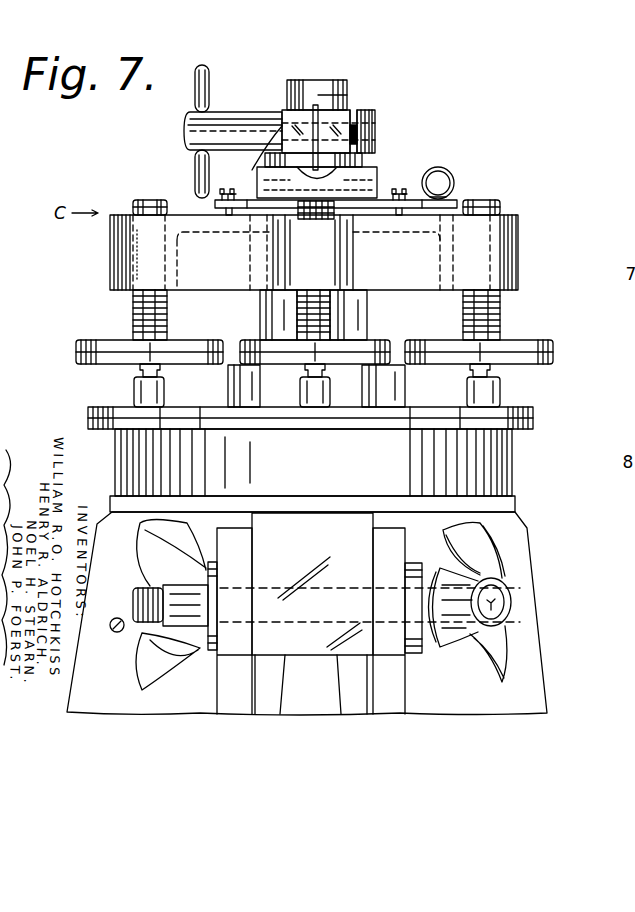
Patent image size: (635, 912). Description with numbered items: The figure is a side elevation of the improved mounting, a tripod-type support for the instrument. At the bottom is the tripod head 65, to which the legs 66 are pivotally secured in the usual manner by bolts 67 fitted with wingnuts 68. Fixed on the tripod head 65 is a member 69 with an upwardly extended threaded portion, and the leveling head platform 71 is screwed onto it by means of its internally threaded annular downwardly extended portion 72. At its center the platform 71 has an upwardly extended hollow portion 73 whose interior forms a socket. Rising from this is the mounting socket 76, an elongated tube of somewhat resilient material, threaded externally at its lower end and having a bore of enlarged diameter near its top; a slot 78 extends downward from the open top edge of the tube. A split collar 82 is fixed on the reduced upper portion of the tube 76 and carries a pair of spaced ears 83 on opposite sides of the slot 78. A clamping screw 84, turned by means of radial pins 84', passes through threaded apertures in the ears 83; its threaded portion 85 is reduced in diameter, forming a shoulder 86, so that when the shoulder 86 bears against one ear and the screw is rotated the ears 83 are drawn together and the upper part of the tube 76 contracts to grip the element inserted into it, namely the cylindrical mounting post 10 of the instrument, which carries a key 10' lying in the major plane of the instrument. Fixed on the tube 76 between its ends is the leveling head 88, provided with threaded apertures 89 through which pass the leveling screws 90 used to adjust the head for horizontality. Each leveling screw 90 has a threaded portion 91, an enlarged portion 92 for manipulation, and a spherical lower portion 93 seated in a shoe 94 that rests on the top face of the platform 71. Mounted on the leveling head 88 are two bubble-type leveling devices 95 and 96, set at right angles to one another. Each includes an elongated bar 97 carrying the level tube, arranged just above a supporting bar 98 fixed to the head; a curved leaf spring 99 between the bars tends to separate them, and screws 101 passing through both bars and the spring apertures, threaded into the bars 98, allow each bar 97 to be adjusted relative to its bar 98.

The mounting post 10 is at (354, 78).
The key 10' is at (356, 93).
The tripod head 65 is at (513, 528).
The legs 66 is at (532, 666).
The bolts 67 is at (140, 605).
The wingnuts 68 is at (478, 555).
The member 69 is at (515, 505).
The leveling head platform 71 is at (536, 414).
The annular downwardly extended portion 72 is at (500, 462).
The upwardly extended hollow portion 73 is at (406, 383).
The mounting socket 76 is at (282, 318).
The slot 78 is at (362, 160).
The split collar 82 is at (376, 118).
The ears 83 is at (306, 108).
The clamping screw 84 is at (329, 128).
The radial pins 84' is at (203, 116).
The screwthreaded portion 85 is at (358, 148).
The shoulder 86 is at (276, 140).
The leveling head 88 is at (520, 278).
The screwthreaded apertures 89 is at (135, 250).
The leveling screws 90 is at (133, 316).
The screwthreaded portion 91 is at (140, 204).
The enlarged portion 92 is at (76, 348).
The spherical lower portion 93 is at (140, 372).
The shoe 94 is at (134, 396).
The leveling device 95 is at (362, 183).
The leveling device 96 is at (456, 180).
The elongated bar 97 is at (215, 205).
The bars 98 is at (229, 217).
The leaf spring 99 is at (250, 216).
The screws 101 is at (309, 231).